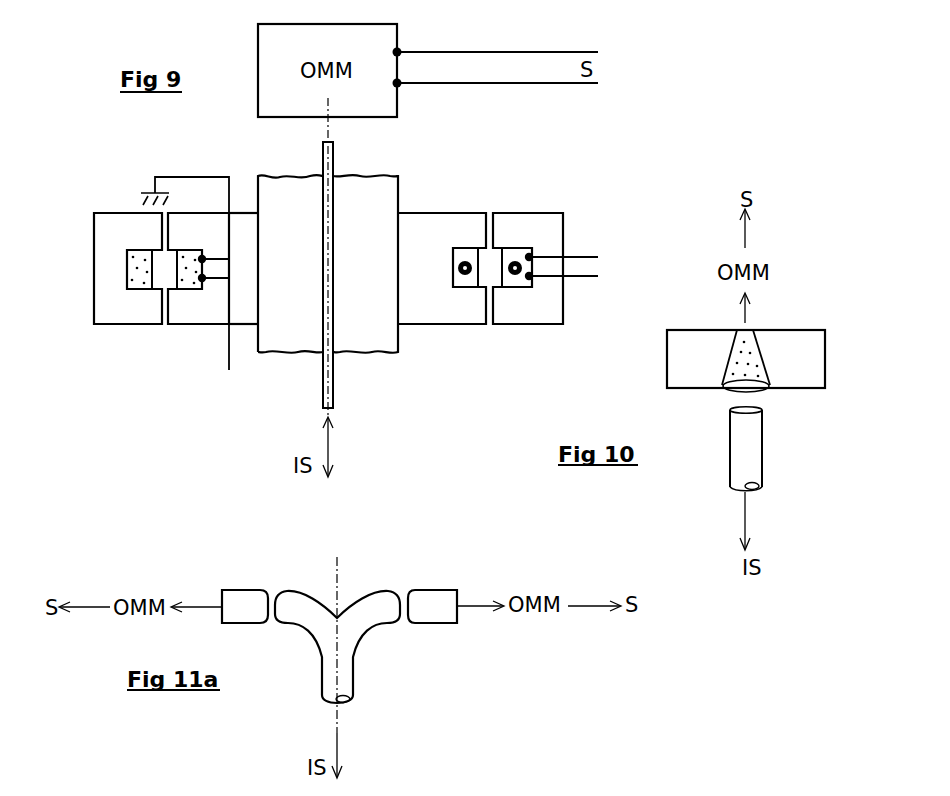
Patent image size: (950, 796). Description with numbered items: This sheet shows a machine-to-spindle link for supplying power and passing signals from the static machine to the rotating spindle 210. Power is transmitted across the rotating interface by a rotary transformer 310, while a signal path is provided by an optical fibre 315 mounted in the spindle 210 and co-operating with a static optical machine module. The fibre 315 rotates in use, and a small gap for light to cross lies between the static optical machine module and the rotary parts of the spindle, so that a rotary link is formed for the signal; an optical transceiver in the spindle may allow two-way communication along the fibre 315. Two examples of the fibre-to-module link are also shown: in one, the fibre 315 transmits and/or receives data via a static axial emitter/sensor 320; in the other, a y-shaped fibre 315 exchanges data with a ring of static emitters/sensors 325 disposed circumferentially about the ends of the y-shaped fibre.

In FIG. 9, the spindle 210 is at (355, 198).
In FIG. 9, the rotary transformer 310 is at (500, 194).
In FIG. 9, the optical fibre 315 is at (333, 373).
In FIG. 10, the optical fibre 315 is at (752, 452).
In FIG. 11A, the optical fibre 315 is at (343, 670).
In FIG. 10, the static axial emitter/sensor 320 is at (787, 368).
In FIG. 11A, the ring of static emitters/sensors 325 is at (243, 602).